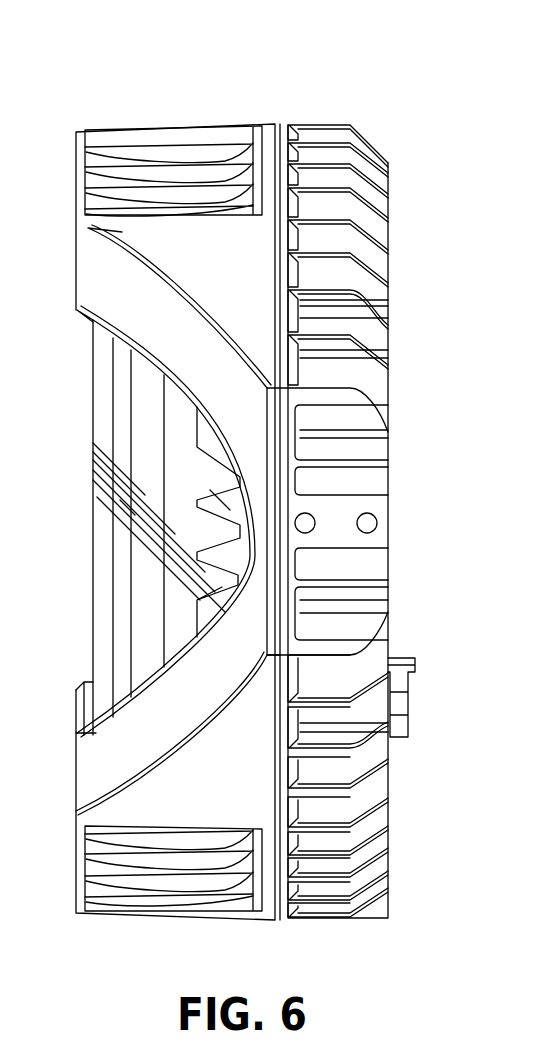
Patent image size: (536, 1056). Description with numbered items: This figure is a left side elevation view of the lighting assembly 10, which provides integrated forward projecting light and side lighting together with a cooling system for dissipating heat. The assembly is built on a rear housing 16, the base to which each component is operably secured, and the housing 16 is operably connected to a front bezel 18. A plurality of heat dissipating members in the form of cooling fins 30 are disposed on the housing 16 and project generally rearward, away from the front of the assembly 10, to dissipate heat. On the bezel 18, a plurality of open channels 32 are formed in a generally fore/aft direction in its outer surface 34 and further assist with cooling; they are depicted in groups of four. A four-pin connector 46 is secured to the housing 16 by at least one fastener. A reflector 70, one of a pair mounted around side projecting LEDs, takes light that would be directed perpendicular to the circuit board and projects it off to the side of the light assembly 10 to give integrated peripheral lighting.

The lighting assembly 10 is at (249, 487).
The housing 16 is at (370, 542).
The bezel 18 is at (122, 232).
The heat dissipating member 30 is at (378, 266).
The open channel 32 is at (200, 138).
The outer surface 34 is at (110, 813).
The connector 46 is at (407, 710).
The reflector 70 is at (220, 548).